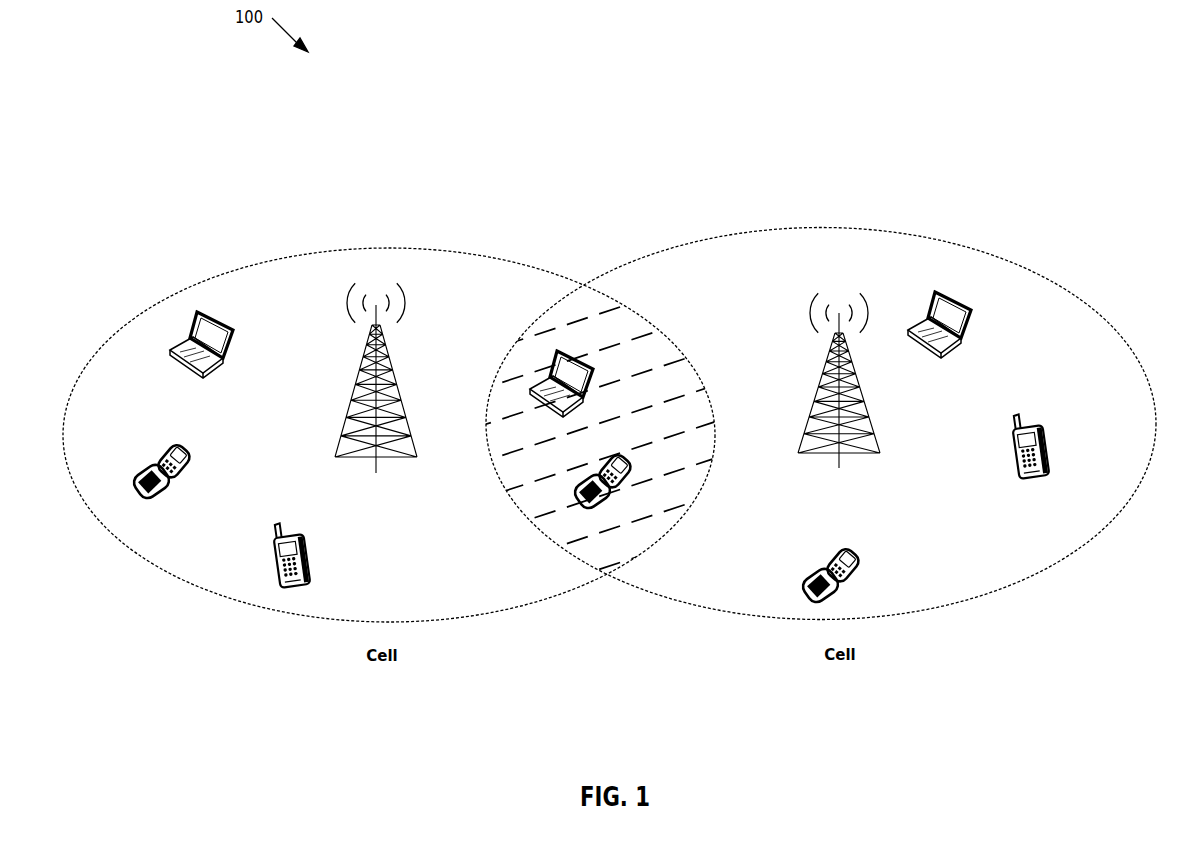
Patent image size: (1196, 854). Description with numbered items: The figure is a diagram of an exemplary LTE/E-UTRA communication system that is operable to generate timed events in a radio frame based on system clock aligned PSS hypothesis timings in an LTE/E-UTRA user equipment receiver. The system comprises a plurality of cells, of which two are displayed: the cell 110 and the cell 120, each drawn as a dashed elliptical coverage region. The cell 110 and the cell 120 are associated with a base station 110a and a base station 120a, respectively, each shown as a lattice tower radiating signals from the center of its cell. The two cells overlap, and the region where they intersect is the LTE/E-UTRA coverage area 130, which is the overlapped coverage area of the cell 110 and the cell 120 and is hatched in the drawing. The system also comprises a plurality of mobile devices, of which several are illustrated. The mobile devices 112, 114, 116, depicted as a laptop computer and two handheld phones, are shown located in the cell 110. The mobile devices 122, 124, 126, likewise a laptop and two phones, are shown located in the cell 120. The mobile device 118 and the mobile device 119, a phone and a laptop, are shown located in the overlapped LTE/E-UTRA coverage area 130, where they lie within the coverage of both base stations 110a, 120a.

The cell 110 is at (490, 256).
The base station 110a is at (408, 305).
The mobile device 112 is at (235, 330).
The mobile device 114 is at (184, 460).
The mobile device 116 is at (307, 569).
The mobile device 118 is at (630, 485).
The mobile device 119 is at (593, 396).
The cell 120 is at (887, 237).
The base station 120a is at (872, 320).
The mobile device 122 is at (968, 310).
The mobile device 124 is at (1047, 457).
The mobile device 126 is at (855, 565).
The LTE/E-UTRA coverage area 130 is at (577, 288).